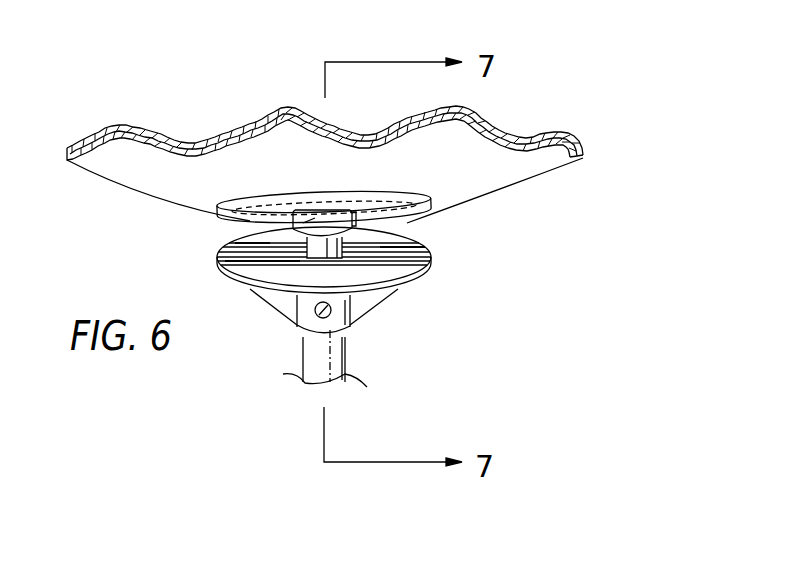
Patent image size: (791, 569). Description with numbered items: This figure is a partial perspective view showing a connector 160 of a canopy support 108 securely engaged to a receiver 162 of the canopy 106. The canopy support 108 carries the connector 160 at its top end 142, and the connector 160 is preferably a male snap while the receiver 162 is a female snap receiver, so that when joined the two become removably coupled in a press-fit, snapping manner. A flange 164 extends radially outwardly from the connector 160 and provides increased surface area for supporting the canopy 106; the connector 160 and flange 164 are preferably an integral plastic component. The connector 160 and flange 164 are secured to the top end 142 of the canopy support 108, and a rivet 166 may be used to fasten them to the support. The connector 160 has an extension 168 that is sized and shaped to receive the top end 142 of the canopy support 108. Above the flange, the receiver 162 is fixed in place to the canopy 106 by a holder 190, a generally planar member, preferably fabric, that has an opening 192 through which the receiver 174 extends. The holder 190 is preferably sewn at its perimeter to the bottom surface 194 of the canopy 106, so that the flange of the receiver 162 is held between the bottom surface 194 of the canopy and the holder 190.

The canopy 106 is at (562, 160).
The canopy support 108 is at (307, 367).
The top end 142 is at (358, 349).
The connector 160 is at (295, 227).
The receiver 162 is at (356, 225).
The flange 164 is at (432, 264).
The rivet 166 is at (288, 333).
The extension 168 is at (353, 322).
The receiver 174 is at (305, 212).
The holder 190 is at (280, 207).
The opening 192 is at (344, 215).
The bottom surface 194 is at (528, 167).